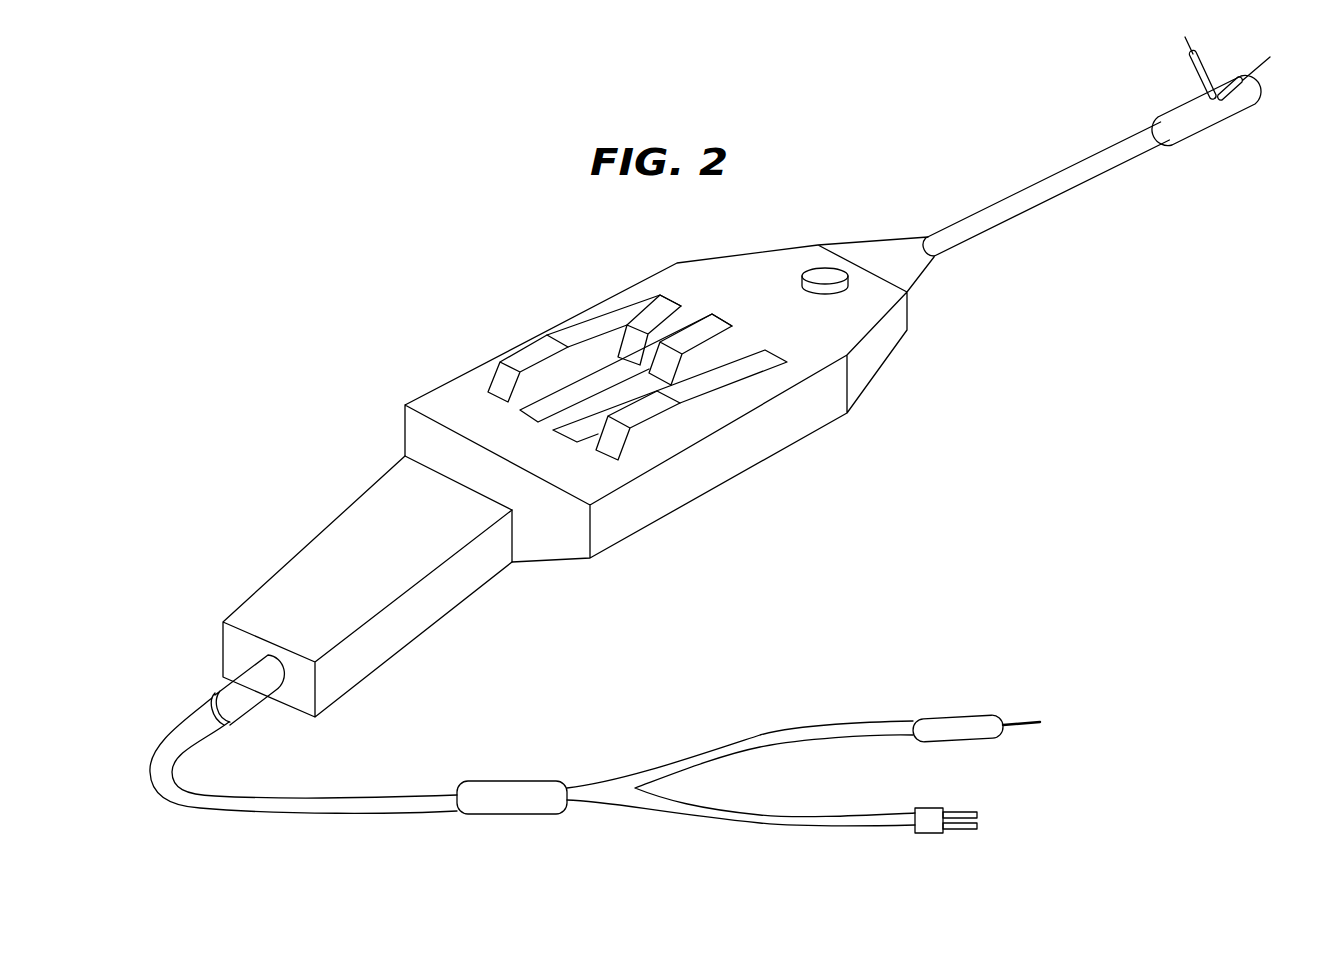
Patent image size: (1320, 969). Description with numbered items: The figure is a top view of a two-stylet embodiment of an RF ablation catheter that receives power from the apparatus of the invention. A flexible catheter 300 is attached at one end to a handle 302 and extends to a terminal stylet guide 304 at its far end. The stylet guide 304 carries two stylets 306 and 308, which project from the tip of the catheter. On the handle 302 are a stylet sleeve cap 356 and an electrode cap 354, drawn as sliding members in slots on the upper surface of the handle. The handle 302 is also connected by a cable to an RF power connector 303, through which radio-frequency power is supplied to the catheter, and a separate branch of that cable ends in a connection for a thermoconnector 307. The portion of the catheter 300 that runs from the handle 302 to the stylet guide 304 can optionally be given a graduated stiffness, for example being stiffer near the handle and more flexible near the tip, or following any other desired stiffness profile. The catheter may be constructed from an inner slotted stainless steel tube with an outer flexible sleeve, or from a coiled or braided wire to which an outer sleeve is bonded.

The flexible catheter 300 is at (980, 229).
The handle 302 is at (485, 288).
The RF power connector 303 is at (943, 722).
The terminal stylet guide 304 is at (1217, 127).
The stylet 306 is at (1193, 70).
The thermoconnector 307 is at (930, 833).
The stylet 308 is at (1262, 80).
The electrode cap 354 is at (713, 324).
The stylet sleeve cap 356 is at (517, 359).